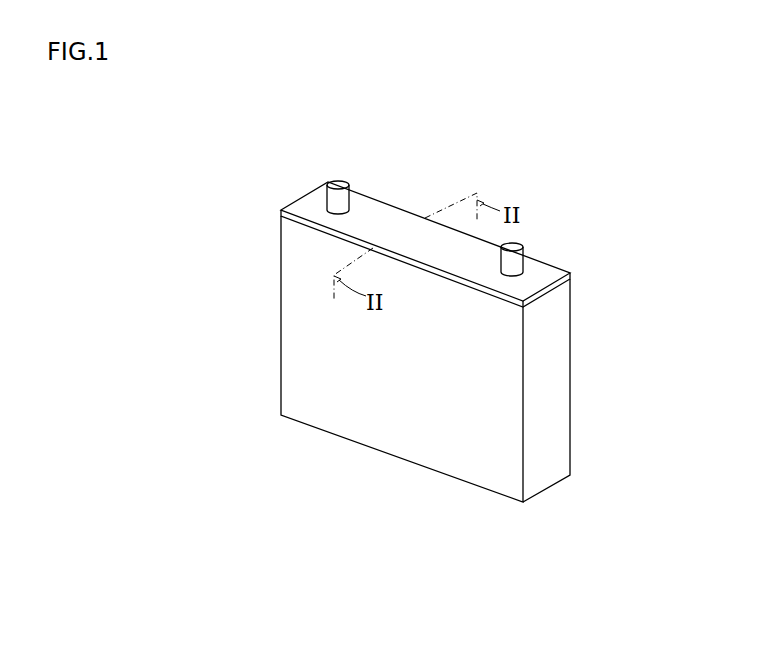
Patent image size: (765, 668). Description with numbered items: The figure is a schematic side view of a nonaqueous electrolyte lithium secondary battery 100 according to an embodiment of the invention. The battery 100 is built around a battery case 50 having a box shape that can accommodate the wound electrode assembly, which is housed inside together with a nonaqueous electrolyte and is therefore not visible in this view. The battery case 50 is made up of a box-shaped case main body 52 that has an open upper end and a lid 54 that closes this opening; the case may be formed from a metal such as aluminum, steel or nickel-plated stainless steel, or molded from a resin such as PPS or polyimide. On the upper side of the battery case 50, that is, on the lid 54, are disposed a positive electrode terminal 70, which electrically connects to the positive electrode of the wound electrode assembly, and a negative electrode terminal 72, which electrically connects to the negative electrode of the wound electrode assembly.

The lithium secondary battery 100 is at (672, 103).
The battery case 50 is at (274, 364).
The case main body 52 is at (572, 341).
The lid 54 is at (570, 269).
The positive electrode terminal 70 is at (338, 180).
The negative electrode terminal 72 is at (516, 244).